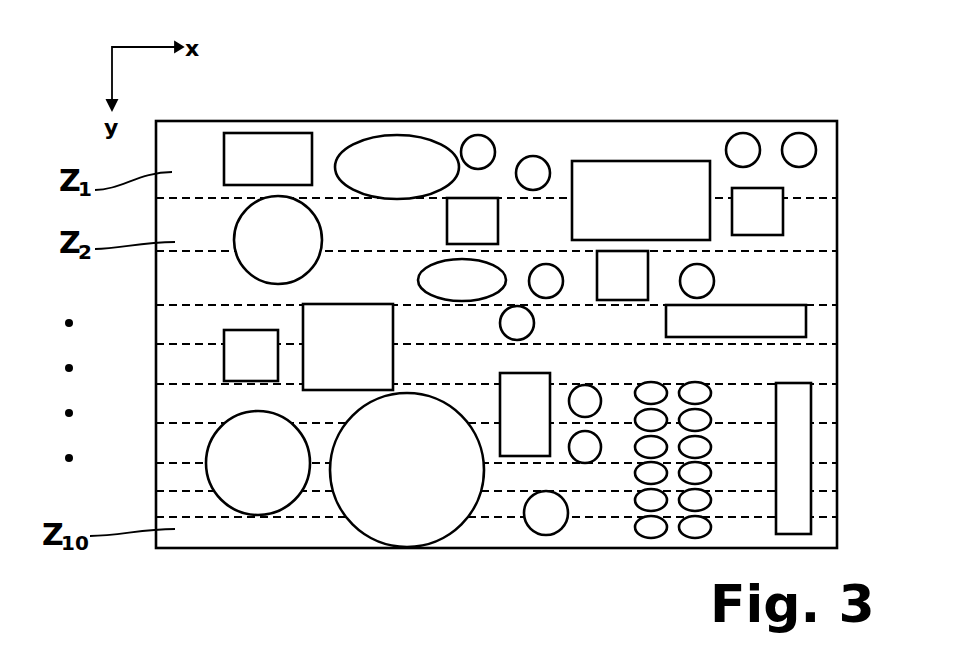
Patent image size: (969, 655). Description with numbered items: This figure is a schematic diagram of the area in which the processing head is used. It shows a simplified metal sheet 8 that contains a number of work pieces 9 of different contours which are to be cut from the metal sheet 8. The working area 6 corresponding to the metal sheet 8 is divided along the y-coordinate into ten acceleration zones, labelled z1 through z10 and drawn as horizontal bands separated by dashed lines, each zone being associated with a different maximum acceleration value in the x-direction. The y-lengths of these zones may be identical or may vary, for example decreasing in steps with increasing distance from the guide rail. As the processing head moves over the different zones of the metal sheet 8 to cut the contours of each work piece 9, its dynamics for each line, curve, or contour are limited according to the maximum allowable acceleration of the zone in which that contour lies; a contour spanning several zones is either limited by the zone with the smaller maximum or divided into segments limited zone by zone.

The working area 6 is at (837, 165).
The metal sheet 8 is at (583, 153).
The work pieces 9 is at (385, 150).